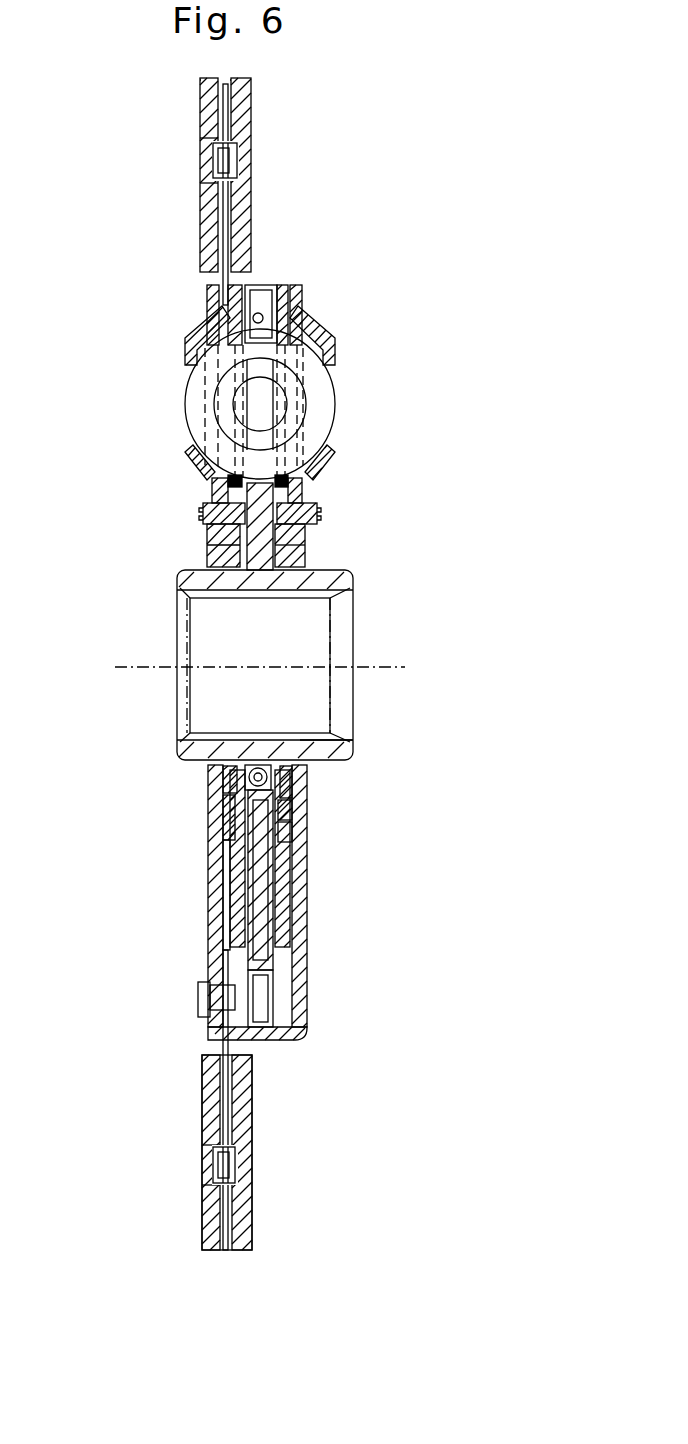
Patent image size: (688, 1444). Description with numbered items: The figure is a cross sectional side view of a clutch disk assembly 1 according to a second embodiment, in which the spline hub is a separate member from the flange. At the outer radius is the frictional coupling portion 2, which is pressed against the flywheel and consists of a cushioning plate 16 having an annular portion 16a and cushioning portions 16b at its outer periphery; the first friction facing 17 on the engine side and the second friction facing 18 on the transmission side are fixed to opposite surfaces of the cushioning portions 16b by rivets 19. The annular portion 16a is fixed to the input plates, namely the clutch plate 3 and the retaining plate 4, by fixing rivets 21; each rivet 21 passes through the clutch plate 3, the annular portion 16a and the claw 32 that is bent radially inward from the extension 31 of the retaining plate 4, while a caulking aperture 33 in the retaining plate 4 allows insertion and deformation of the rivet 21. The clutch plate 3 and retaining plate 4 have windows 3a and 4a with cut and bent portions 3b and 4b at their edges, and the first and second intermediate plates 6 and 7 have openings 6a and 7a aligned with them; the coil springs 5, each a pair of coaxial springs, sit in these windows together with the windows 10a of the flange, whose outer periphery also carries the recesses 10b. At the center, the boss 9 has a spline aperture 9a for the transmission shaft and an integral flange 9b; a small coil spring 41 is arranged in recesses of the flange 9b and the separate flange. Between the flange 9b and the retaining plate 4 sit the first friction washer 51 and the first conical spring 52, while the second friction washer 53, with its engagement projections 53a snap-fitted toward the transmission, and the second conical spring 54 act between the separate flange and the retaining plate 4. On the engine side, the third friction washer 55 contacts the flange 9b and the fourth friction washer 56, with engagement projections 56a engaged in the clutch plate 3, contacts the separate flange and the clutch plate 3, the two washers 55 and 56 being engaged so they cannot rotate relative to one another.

The clutch disk assembly 1 is at (479, 109).
The frictional coupling portion 2 is at (145, 145).
The clutch plate 3 is at (212, 848).
The window 3a is at (168, 390).
The cut and bent portion 3b is at (195, 335).
The retaining plate 4 is at (310, 860).
The window 4a is at (349, 420).
The cut and bent portion 4b is at (328, 333).
The coil spring 5 is at (322, 392).
The first intermediate plate 6 is at (212, 880).
The opening 6a is at (205, 318).
The second intermediate plate 7 is at (302, 887).
The opening 7a is at (297, 317).
The boss 9 is at (347, 562).
The spline aperture 9a is at (258, 591).
The flange 9b is at (308, 542).
The window 10a is at (262, 306).
The recess 10b is at (265, 987).
The cushioning plate 16 is at (206, 1083).
The annular portion 16a is at (213, 962).
The cushioning portion 16b is at (234, 110).
The first friction facing 17 is at (213, 1110).
The second friction facing 18 is at (246, 1112).
The rivet 19 is at (230, 162).
The fixing rivet 21 is at (208, 1003).
The extension 31 is at (266, 1041).
The claw 32 is at (215, 940).
The caulking aperture 33 is at (302, 998).
The small coil spring 41 is at (355, 732).
The first friction washer 51 is at (290, 772).
The first conical spring 52 is at (307, 787).
The second friction washer 53 is at (303, 822).
The engagement projection 53a is at (312, 505).
The second conical spring 54 is at (305, 835).
The third friction washer 55 is at (208, 778).
The fourth friction washer 56 is at (217, 812).
The engagement projection 56a is at (210, 524).